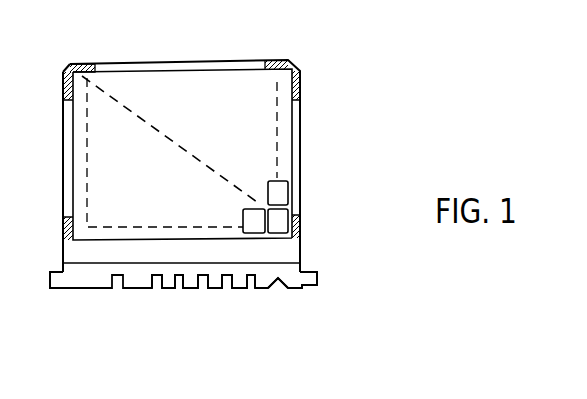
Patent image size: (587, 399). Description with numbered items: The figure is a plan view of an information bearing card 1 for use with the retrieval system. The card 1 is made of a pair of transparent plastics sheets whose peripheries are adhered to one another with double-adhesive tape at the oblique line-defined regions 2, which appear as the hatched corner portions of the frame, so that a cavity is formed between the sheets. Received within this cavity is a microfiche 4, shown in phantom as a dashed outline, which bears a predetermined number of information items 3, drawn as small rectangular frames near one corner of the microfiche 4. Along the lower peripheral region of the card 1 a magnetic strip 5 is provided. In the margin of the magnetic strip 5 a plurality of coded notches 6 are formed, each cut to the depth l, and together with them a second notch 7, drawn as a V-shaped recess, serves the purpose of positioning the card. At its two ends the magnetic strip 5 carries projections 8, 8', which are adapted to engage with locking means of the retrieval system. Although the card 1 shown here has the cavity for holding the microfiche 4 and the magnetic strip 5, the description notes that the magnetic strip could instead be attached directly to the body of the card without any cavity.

The information bearing card 1 is at (141, 63).
The frame / rim with hatched corner portions 2 is at (301, 71).
The information items 3 is at (278, 190).
The microfiche 4 is at (247, 80).
The magnetic strip 5 is at (100, 289).
The coded notches 6 is at (256, 297).
The second notch 7 is at (287, 291).
The projection 8 is at (39, 316).
The projection 8' is at (325, 307).
The depth of the coded notches l is at (178, 276).